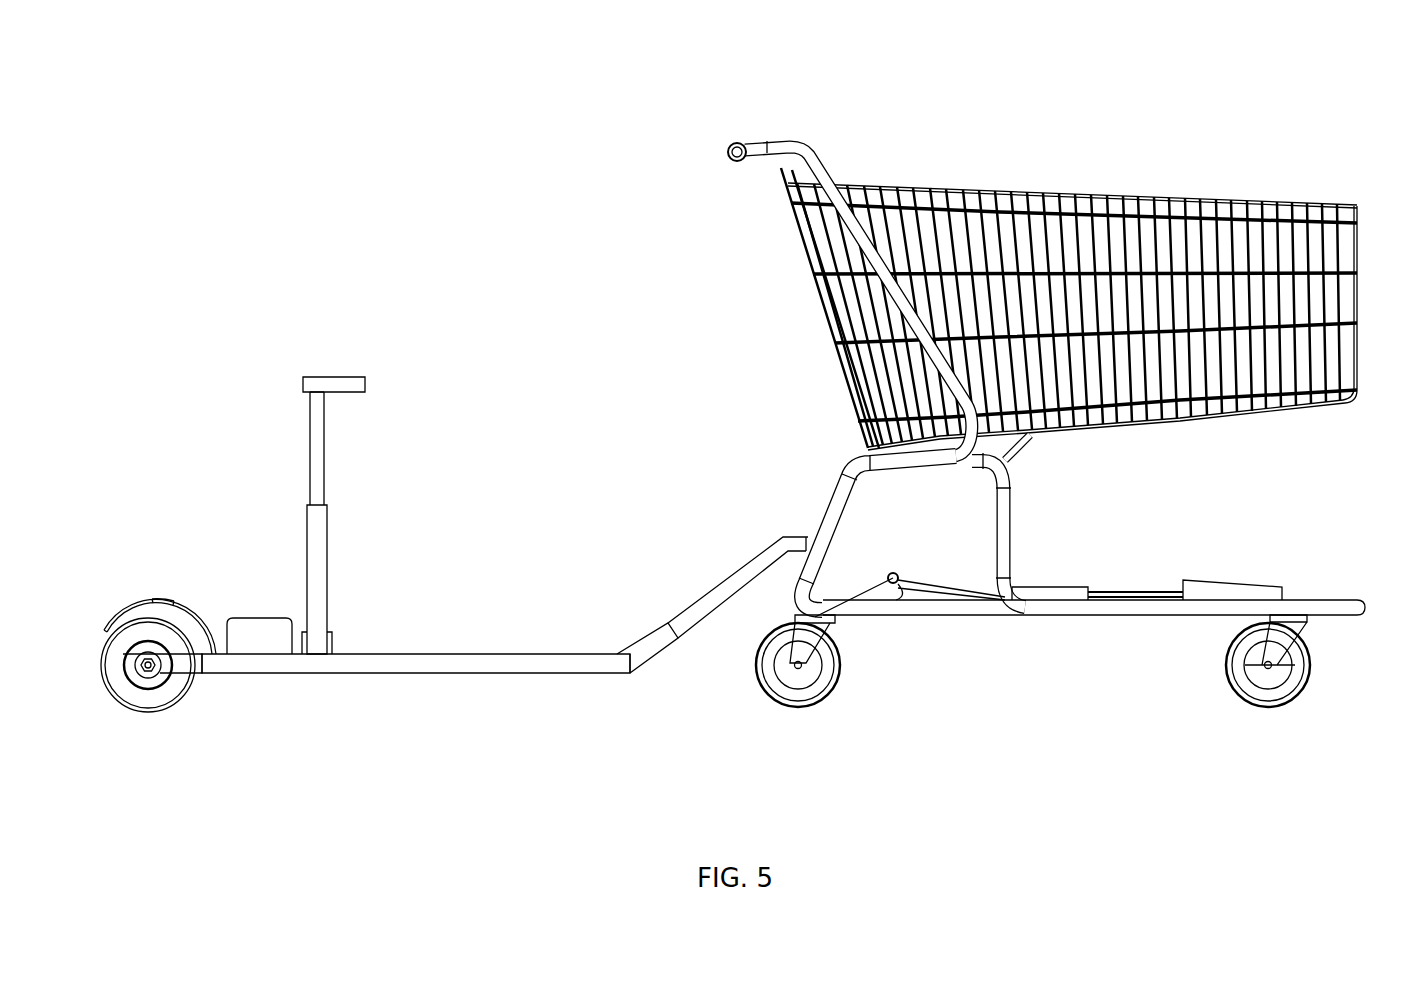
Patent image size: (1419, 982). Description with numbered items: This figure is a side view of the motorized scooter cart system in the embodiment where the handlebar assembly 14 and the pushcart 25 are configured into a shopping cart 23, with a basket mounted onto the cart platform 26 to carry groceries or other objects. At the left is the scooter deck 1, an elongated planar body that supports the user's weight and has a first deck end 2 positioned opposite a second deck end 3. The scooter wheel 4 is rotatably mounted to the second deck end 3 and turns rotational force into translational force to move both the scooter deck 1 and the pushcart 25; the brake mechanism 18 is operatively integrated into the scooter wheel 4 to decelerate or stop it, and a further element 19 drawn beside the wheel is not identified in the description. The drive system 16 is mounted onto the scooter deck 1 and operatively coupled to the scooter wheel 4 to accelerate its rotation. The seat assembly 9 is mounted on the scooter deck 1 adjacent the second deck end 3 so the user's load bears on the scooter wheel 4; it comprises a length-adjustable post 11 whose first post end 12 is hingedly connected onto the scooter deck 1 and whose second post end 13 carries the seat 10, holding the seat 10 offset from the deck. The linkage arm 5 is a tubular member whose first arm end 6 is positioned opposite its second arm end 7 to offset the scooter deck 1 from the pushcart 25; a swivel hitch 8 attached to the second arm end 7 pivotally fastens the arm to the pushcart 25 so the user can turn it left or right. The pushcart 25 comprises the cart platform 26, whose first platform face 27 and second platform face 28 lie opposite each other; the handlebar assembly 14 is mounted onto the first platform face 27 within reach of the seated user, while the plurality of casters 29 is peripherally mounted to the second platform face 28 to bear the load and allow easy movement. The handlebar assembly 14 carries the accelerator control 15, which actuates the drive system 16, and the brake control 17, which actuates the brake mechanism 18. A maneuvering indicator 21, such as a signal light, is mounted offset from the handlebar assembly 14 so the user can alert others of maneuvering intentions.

The scooter deck 1 is at (400, 664).
The first deck end 2 is at (626, 676).
The second deck end 3 is at (208, 670).
The scooter wheel 4 is at (175, 692).
The linkage arm 5 is at (718, 590).
The first arm end 6 is at (640, 640).
The second arm end 7 is at (836, 546).
The swivel hitch 8 is at (805, 535).
The seat assembly 9 is at (336, 308).
The seat 10 is at (360, 383).
The length-adjustable post 11 is at (318, 490).
The first post end 12 is at (328, 640).
The second post end 13 is at (313, 394).
The handlebar assembly 14 is at (724, 124).
The accelerator control 15 is at (733, 160).
The drive system 16 is at (268, 617).
The brake control 17 is at (760, 142).
The brake mechanism 18 is at (140, 657).
The fender 19 is at (132, 608).
The maneuvering indicator 21 is at (162, 602).
The shopping cart 23 is at (996, 112).
The pushcart 25 is at (1069, 309).
The cart platform 26 is at (1060, 607).
The first platform face 27 is at (1320, 598).
The second platform face 28 is at (1325, 620).
The casters 29 is at (825, 690).